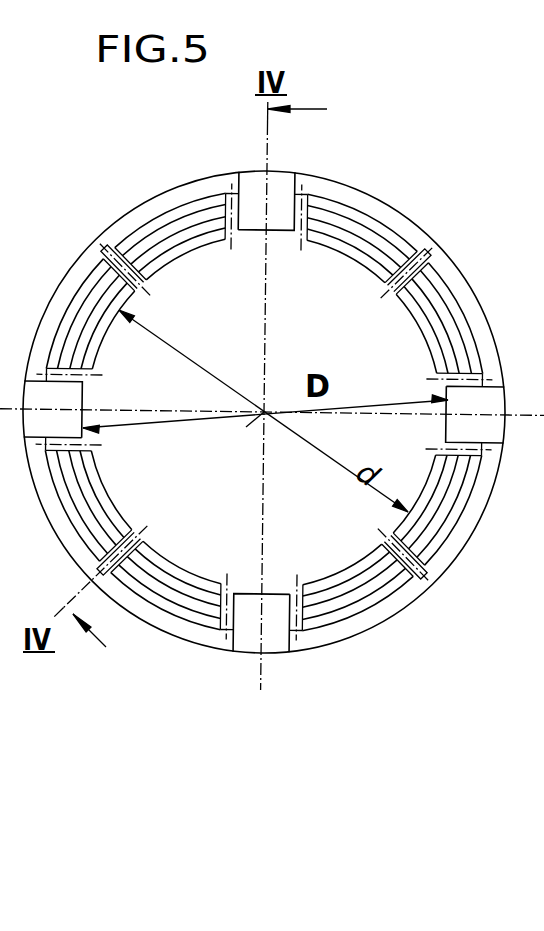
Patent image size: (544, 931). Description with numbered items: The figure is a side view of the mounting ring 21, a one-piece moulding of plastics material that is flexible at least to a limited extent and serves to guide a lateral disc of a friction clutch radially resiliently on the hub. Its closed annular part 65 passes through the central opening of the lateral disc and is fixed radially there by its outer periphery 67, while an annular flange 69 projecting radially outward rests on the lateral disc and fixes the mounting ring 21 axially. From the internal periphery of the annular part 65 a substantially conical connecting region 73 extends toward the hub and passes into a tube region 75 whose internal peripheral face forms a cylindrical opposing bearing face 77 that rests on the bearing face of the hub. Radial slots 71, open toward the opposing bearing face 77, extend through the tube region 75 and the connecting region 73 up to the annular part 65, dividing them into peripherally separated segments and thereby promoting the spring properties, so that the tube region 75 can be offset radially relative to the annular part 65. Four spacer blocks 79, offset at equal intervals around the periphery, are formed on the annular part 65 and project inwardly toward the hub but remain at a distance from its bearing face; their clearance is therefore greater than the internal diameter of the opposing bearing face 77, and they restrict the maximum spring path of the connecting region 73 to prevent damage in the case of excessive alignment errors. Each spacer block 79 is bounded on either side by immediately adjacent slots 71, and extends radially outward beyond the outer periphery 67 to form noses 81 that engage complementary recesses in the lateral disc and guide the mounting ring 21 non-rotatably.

The mounting ring 21 is at (272, 393).
The annular part 65 is at (163, 220).
The outer periphery 67 is at (193, 196).
The annular flange 69 is at (130, 220).
The radial slots 71 is at (298, 240).
The connecting region 73 is at (198, 230).
The tube region 75 is at (158, 262).
The opposing bearing face 77 is at (100, 349).
The spacer blocks 79 is at (283, 190).
The noses 81 is at (245, 174).